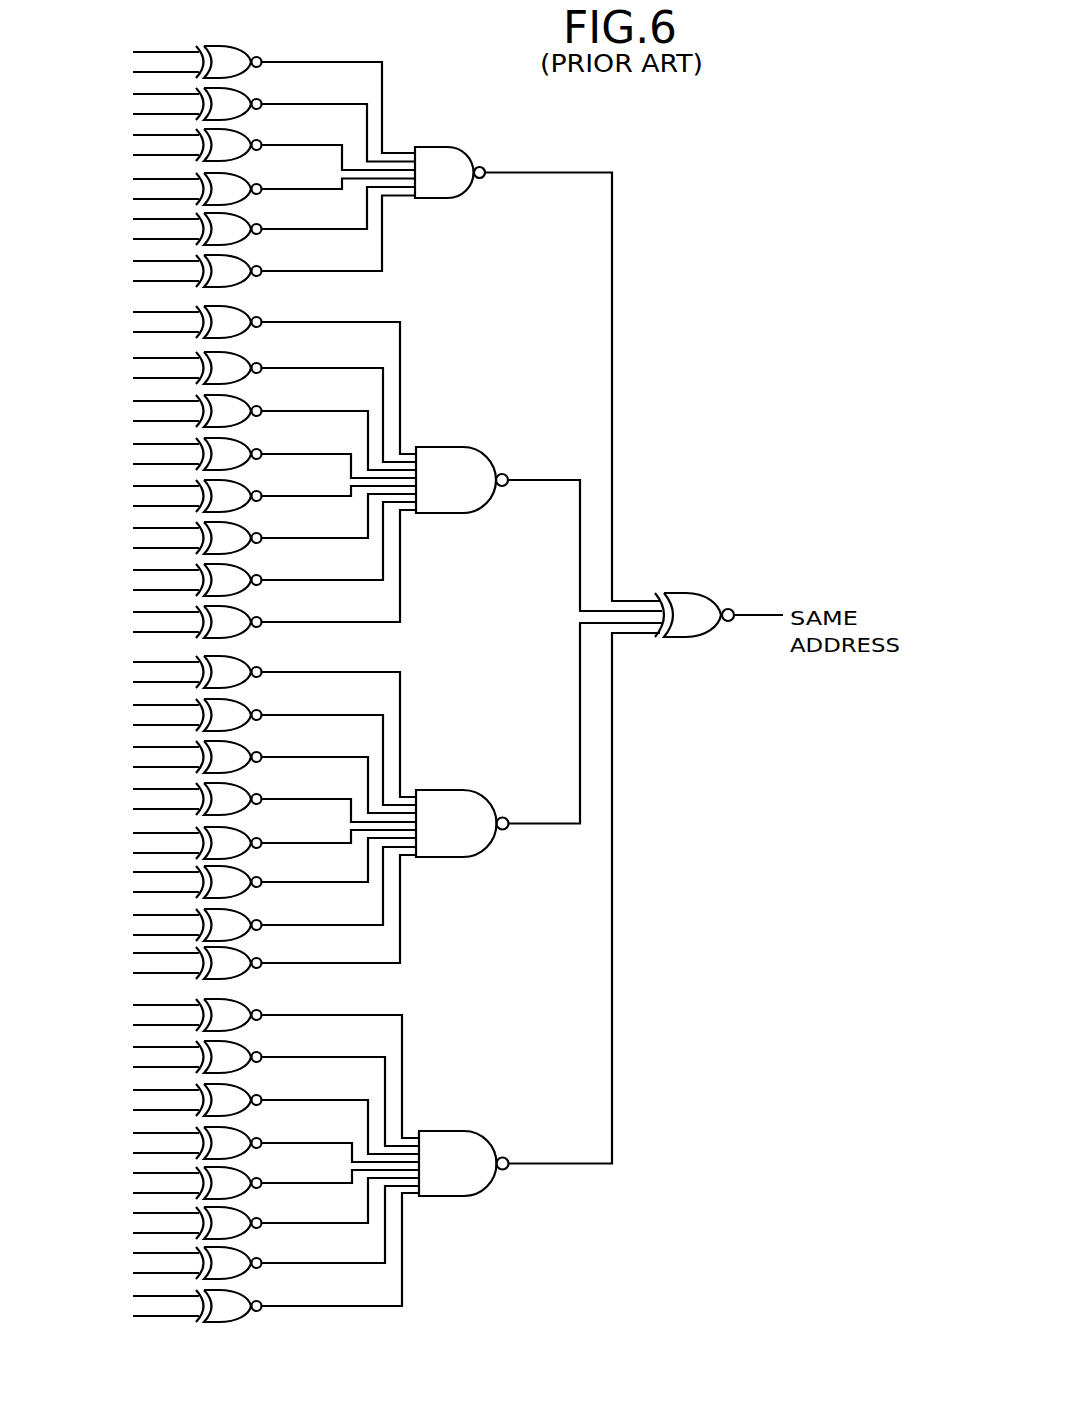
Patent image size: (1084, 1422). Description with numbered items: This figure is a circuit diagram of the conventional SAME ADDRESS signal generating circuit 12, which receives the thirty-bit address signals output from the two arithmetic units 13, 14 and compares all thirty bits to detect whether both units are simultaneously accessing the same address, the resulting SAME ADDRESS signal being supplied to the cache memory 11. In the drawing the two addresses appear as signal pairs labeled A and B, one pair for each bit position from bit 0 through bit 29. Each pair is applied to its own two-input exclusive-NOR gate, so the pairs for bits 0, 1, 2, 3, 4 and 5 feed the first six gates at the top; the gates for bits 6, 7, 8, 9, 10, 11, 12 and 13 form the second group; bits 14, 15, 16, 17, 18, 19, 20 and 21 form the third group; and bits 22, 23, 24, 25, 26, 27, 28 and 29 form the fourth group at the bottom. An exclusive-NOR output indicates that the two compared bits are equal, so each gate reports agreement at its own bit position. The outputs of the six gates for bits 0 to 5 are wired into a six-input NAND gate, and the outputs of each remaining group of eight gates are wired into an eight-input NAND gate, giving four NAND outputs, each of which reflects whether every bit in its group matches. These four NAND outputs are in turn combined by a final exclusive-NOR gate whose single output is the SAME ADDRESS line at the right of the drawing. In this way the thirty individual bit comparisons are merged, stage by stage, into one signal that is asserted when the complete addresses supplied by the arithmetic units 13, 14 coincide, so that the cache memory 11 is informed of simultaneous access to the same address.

The exclusive-NOR gate comparing address bits A0 and B0 0 is at (248, 96).
The exclusive-NOR gate comparing address bits A1 and B1 1 is at (248, 123).
The exclusive-NOR gate comparing address bits A2 and B2 2 is at (248, 151).
The exclusive-NOR gate comparing address bits A3 and B3 3 is at (248, 197).
The exclusive-NOR gate comparing address bits A4 and B4 4 is at (248, 224).
The exclusive-NOR gate comparing address bits A5 and B5 5 is at (248, 250).
The exclusive-NOR gate comparing address bits A6 and B6 6 is at (249, 377).
The exclusive-NOR gate comparing address bits A7 and B7 7 is at (249, 404).
The exclusive-NOR gate comparing address bits A8 and B8 8 is at (249, 430).
The exclusive-NOR gate comparing address bits A9 and B9 9 is at (249, 458).
The exclusive-NOR gate comparing address bits A10 and B10 10 is at (249, 502).
The cache memory 11 is at (249, 531).
The SAME ADDRESS signal generating circuit 12 is at (249, 556).
The arithmetic unit 13 is at (249, 581).
The arithmetic unit 14 is at (249, 724).
The exclusive-NOR gate comparing address bits A15 and B15 15 is at (249, 750).
The exclusive-NOR gate comparing address bits A16 and B16 16 is at (249, 775).
The exclusive-NOR gate comparing address bits A17 and B17 17 is at (249, 804).
The exclusive-NOR gate comparing address bits A18 and B18 18 is at (249, 847).
The exclusive-NOR gate comparing address bits A19 and B19 19 is at (249, 876).
The exclusive-NOR gate comparing address bits A20 and B20 20 is at (249, 902).
The exclusive-NOR gate comparing address bits A21 and B21 21 is at (249, 927).
The exclusive-NOR gate comparing address bits A22 and B22 22 is at (250, 1068).
The exclusive-NOR gate comparing address bits A23 and B23 23 is at (250, 1093).
The exclusive-NOR gate comparing address bits A24 and B24 24 is at (250, 1117).
The exclusive-NOR gate comparing address bits A25 and B25 25 is at (250, 1149).
The exclusive-NOR gate comparing address bits A26 and B26 26 is at (250, 1190).
The exclusive-NOR gate comparing address bits A27 and B27 27 is at (250, 1217).
The exclusive-NOR gate comparing address bits A28 and B28 28 is at (250, 1242).
The exclusive-NOR gate comparing address bits A29 and B29 29 is at (250, 1267).